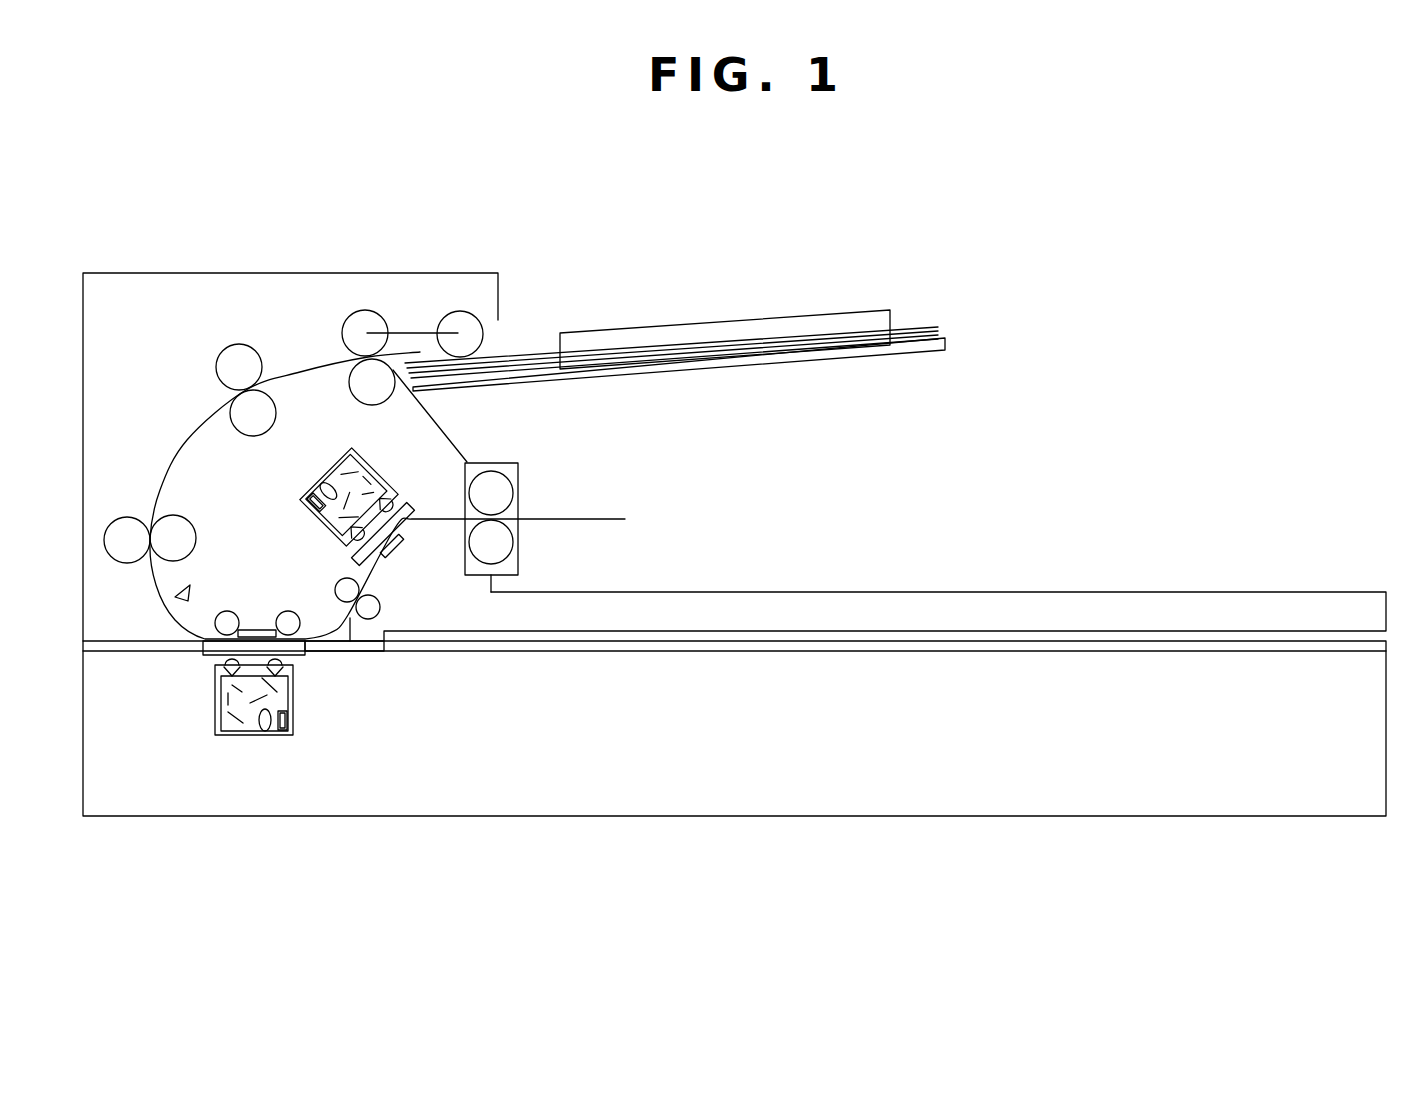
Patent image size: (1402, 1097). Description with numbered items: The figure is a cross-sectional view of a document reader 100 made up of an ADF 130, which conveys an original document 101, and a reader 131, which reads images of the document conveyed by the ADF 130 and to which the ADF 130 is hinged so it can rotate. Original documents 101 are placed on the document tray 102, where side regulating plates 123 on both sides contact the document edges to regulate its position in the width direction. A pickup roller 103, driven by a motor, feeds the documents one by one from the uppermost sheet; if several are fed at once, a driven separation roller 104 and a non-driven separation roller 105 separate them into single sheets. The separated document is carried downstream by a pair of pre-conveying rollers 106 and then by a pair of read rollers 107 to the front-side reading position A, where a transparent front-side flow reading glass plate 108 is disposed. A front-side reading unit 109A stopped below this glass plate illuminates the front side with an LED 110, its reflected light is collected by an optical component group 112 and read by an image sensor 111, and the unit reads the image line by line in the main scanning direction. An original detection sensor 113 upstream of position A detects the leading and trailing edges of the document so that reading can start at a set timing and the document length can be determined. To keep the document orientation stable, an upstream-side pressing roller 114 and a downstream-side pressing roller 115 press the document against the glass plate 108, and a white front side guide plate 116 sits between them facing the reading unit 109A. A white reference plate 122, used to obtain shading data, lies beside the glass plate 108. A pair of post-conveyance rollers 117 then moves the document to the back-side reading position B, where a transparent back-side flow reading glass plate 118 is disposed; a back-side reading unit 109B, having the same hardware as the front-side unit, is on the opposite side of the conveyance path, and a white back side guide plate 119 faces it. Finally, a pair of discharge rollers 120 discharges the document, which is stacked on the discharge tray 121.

The document reader 100 is at (172, 238).
The original document 101 is at (946, 330).
The document tray 102 is at (750, 360).
The pickup roller 103 is at (457, 311).
The separation roller 104 is at (343, 330).
The separation roller 105 is at (354, 398).
The pair of pre-conveying rollers 106 is at (216, 362).
The pair of read rollers 107 is at (133, 518).
The front-side flow reading glass plate 108 is at (210, 657).
The front-side reading unit 109A is at (252, 706).
The back-side reading unit 109B is at (397, 457).
The LED 110 is at (293, 675).
The image sensor 111 is at (293, 731).
The optical component group 112 is at (293, 705).
The original detection sensor 113 is at (173, 598).
The upstream-side pressing roller 114 is at (222, 611).
The downstream-side pressing roller 115 is at (293, 612).
The white front side guide plate 116 is at (247, 630).
The pair of post-conveyance rollers 117 is at (379, 604).
The back-side flow reading glass plate 118 is at (426, 500).
The white back side guide plate 119 is at (408, 540).
The pair of discharge rollers 120 is at (510, 540).
The discharge tray 121 is at (742, 590).
The white reference plate 122 is at (372, 655).
The side regulating plates 123 is at (797, 326).
The ADF 130 is at (322, 272).
The reader 131 is at (609, 818).
The front-side reading position A is at (257, 626).
The back-side reading position B is at (390, 547).